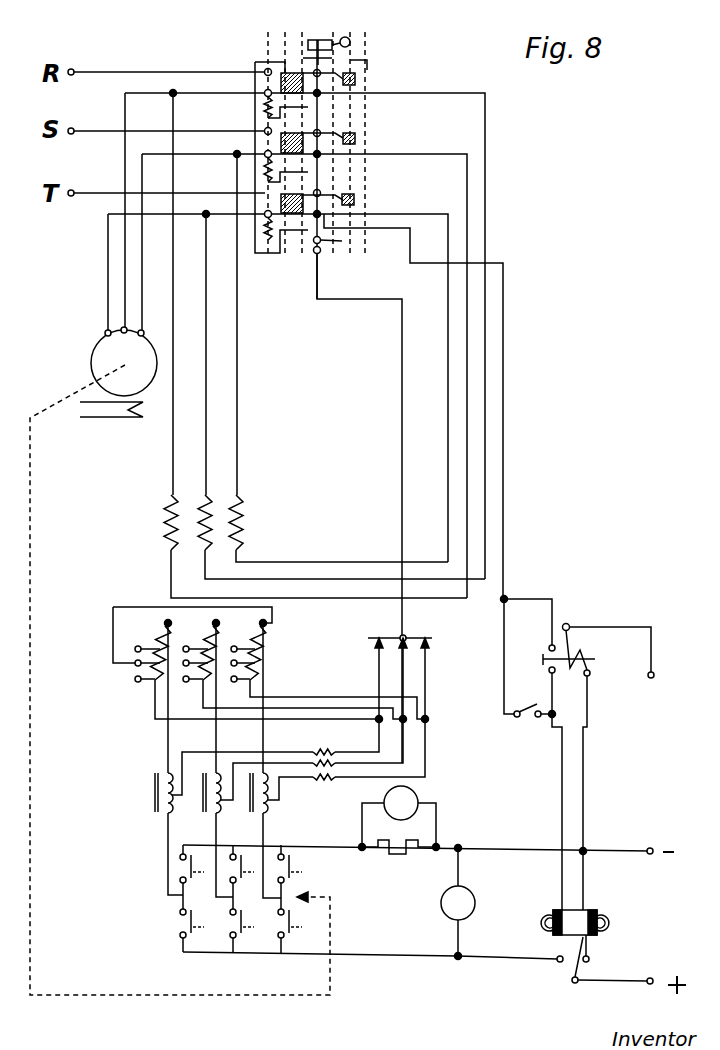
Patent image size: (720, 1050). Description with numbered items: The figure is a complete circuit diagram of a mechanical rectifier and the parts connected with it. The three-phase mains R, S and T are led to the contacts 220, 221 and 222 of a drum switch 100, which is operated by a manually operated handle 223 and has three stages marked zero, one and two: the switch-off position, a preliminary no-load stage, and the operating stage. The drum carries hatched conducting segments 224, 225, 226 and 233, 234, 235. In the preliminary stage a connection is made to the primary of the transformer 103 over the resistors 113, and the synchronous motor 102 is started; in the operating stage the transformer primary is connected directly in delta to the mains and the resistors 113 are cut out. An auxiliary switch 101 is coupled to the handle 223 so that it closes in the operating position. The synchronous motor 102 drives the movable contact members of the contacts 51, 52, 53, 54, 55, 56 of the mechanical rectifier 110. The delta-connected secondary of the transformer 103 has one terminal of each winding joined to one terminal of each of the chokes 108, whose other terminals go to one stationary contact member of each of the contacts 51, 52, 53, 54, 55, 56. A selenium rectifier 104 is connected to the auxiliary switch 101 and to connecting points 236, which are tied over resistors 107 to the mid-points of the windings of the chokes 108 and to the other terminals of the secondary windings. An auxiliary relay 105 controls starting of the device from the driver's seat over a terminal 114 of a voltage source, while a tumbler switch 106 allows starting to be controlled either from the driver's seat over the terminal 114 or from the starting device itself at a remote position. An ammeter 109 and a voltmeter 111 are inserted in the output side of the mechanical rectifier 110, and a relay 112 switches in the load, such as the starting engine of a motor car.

The drum switch 100 is at (355, 118).
The auxiliary switch 101 is at (322, 255).
The synchronous motor 102 is at (100, 360).
The transformer 103 is at (165, 525).
The selenium rectifier 104 is at (432, 640).
The auxiliary relay 105 is at (570, 640).
The tumbler switch 106 is at (520, 718).
The resistors 107 is at (326, 744).
The chokes 108 is at (155, 790).
The ammeter 109 is at (430, 836).
The mechanical rectifier 110 is at (218, 899).
The voltmeter 111 is at (445, 917).
The relay 112 is at (600, 918).
The resistors 113 is at (262, 106).
The terminal 114 is at (648, 678).
The contact 220 is at (265, 69).
The contact 221 is at (264, 129).
The contact 222 is at (240, 213).
The manually operated handle 223 is at (351, 39).
The conducting segment 224 is at (264, 92).
The conducting segment 225 is at (236, 153).
The conducting segment 226 is at (297, 207).
The conducting segment 233 is at (357, 78).
The conducting segment 234 is at (357, 141).
The conducting segment 235 is at (355, 200).
The connecting points 236 is at (379, 719).
The contact 51 is at (251, 857).
The contact 52 is at (298, 943).
The contact 53 is at (203, 857).
The contact 54 is at (251, 943).
The contact 55 is at (300, 857).
The contact 56 is at (200, 943).